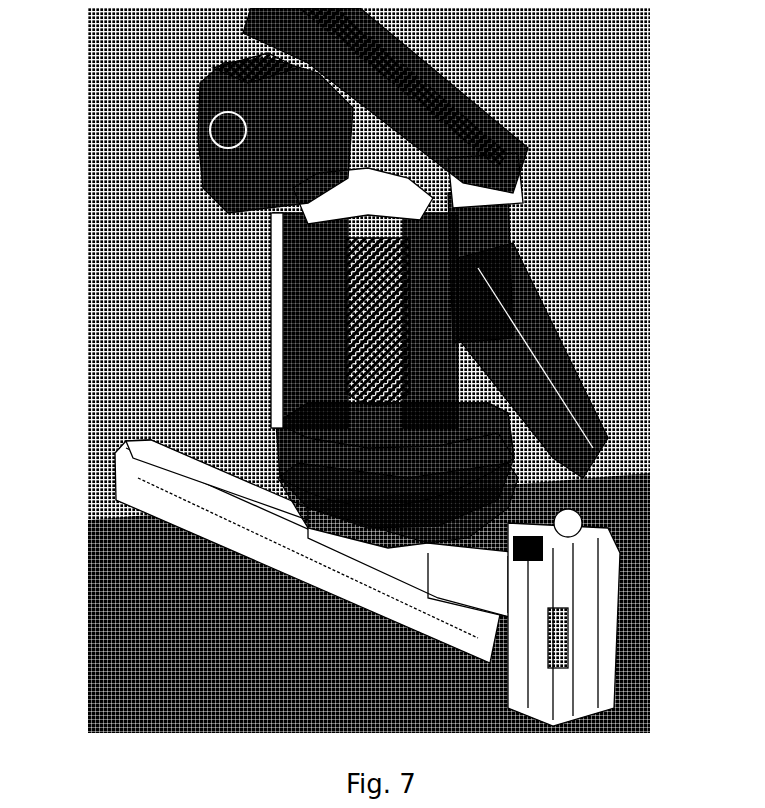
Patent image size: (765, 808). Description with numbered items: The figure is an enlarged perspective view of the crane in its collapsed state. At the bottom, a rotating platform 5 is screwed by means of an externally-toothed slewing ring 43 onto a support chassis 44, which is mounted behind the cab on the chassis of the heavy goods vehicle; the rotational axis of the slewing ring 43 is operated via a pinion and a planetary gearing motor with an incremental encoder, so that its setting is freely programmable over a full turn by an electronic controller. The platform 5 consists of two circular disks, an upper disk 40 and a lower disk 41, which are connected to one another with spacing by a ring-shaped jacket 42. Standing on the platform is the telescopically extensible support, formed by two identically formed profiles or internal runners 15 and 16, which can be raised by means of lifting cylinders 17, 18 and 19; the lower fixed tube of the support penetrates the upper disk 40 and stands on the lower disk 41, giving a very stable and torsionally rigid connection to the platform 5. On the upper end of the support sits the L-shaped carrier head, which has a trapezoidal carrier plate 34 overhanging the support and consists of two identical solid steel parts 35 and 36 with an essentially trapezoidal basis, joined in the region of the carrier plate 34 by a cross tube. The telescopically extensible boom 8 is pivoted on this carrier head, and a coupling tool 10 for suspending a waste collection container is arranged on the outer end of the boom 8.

The rotating platform 5 is at (217, 524).
The telescopically extensible boom 8 is at (536, 360).
The coupling tool 10 is at (610, 617).
The internal runner 15 is at (536, 248).
The internal runner 16 is at (301, 322).
The lifting cylinder 17 is at (222, 320).
The second lifting cylinder 18 is at (263, 320).
The lifting cylinder 19 is at (515, 320).
The carrier plate 34 is at (230, 135).
The part of carrier head 35 is at (207, 54).
The part of carrier head 36 is at (412, 100).
The upper disk 40 is at (353, 454).
The lower disk 41 is at (373, 526).
The ring-shaped jacket 42 is at (487, 505).
The externally-toothed slewing ring 43 is at (438, 586).
The support chassis 44 is at (265, 551).